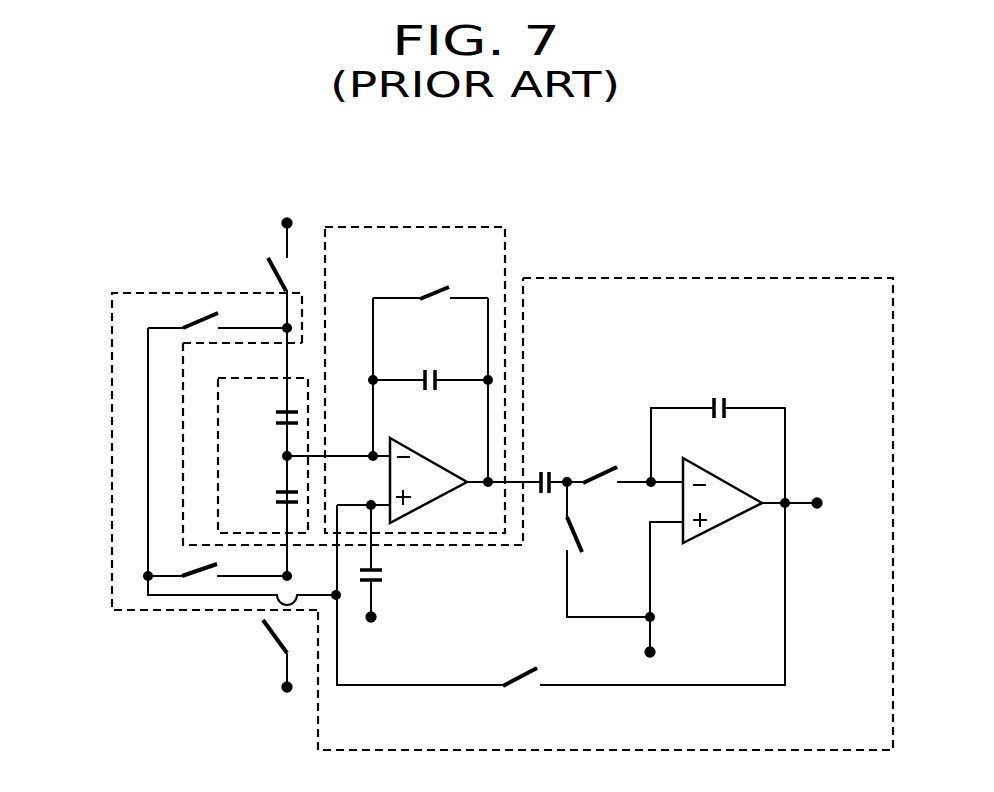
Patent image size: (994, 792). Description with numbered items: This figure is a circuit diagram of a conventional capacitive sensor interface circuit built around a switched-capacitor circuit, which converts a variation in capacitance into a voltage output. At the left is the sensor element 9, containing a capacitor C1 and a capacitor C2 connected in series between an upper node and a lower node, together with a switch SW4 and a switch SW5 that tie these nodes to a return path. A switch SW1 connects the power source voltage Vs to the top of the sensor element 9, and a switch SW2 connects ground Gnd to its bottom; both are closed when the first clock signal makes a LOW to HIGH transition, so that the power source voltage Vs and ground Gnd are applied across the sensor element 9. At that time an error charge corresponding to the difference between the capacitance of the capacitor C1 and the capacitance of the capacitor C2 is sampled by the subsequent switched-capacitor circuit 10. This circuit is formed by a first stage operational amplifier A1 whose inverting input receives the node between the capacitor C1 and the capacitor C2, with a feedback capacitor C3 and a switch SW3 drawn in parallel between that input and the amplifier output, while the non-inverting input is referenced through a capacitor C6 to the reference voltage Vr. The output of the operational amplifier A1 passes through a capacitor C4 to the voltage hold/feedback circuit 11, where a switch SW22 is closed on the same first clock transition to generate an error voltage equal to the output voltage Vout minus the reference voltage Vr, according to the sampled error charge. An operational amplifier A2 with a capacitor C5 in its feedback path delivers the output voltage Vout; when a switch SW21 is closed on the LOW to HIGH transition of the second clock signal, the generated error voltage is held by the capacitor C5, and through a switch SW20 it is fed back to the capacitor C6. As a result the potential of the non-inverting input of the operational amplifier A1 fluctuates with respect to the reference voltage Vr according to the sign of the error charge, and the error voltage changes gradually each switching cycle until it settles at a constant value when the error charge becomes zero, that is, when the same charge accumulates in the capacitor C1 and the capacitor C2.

The sensor element 9 is at (218, 453).
The switched-capacitor circuit 10 is at (507, 243).
The voltage hold/feedback circuit 11 is at (722, 278).
The switch SW1 is at (268, 260).
The switch SW2 is at (270, 635).
The switch SW3 is at (432, 290).
The switch SW4 is at (185, 325).
The switch SW5 is at (207, 578).
The switch SW20 is at (530, 668).
The switch SW21 is at (572, 535).
The switch SW22 is at (603, 462).
The capacitor C1 is at (276, 416).
The capacitor C2 is at (276, 496).
The capacitor C3 is at (430, 370).
The capacitor C4 is at (545, 465).
The capacitor C5 is at (722, 398).
The capacitor C6 is at (380, 576).
The first stage operational amplifier A1 is at (440, 478).
The operational amplifier A2 is at (732, 497).
The power source voltage Vs is at (287, 208).
The reference voltage Vr is at (532, 627).
The ground Gnd is at (283, 702).
The output voltage Vout is at (833, 488).